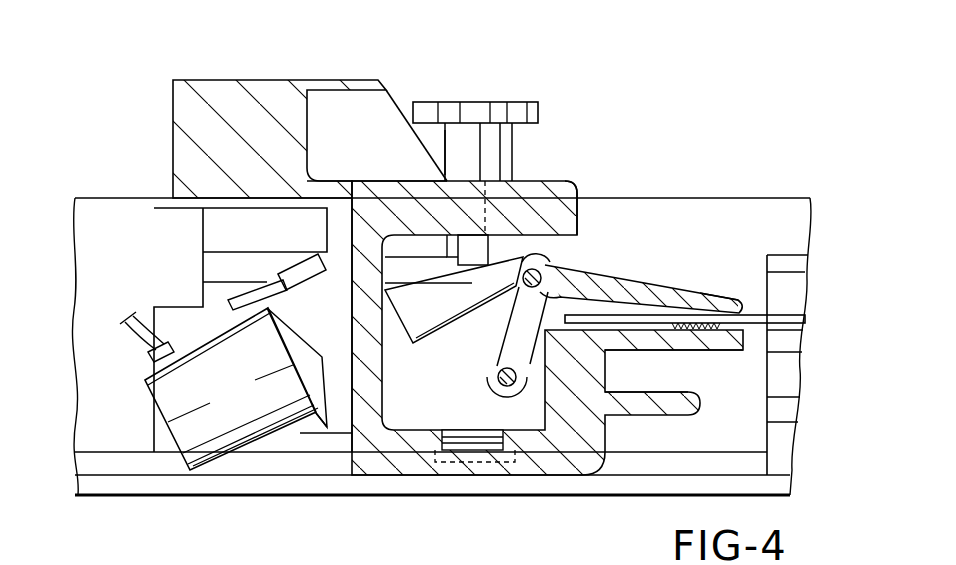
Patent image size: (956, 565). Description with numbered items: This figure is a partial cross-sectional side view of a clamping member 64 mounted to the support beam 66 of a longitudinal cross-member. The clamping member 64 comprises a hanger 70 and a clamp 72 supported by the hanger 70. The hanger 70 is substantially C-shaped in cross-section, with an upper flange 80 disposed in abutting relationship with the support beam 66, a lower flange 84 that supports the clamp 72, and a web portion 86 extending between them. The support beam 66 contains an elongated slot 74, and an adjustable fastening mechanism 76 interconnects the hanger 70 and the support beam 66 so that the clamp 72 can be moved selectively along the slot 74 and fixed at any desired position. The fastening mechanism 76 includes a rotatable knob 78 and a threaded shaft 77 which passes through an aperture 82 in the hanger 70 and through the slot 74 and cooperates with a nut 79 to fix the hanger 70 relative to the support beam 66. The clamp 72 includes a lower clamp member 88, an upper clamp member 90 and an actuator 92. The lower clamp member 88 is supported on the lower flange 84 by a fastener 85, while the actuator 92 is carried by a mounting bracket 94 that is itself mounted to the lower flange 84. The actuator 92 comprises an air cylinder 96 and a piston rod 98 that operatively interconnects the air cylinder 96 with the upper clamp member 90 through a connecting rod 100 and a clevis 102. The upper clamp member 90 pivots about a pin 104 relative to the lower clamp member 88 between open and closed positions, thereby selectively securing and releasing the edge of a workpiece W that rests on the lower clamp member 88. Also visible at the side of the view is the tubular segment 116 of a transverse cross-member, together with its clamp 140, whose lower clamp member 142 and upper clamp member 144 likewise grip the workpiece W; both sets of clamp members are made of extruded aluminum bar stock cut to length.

The clamping member 64 is at (738, 235).
The support beam 66 is at (278, 78).
The hanger 70 is at (342, 243).
The clamp 72 is at (728, 295).
The elongated slot 74 is at (487, 182).
The adjustable fastening mechanism 76 is at (438, 143).
The threaded shaft 77 is at (472, 262).
The rotatable knob 78 is at (470, 107).
The nut 79 is at (577, 217).
The upper flange 80 is at (576, 222).
The aperture 82 is at (490, 228).
The lower flange 84 is at (398, 445).
The fastener 85 is at (460, 468).
The web portion 86 is at (372, 332).
The lower clamp member 88 is at (652, 345).
The upper clamp member 90 is at (667, 290).
The actuator 92 is at (162, 398).
The mounting bracket 94 is at (337, 418).
The air cylinder 96 is at (241, 394).
The piston rod 98 is at (473, 293).
The connecting rod 100 is at (543, 276).
The clevis 102 is at (557, 263).
The pin 104 is at (527, 393).
The tubular segment 116 is at (785, 460).
The clamp 140 is at (810, 290).
The lower clamp member 142 is at (795, 342).
The upper clamp member 144 is at (793, 313).
The workpiece W is at (760, 325).